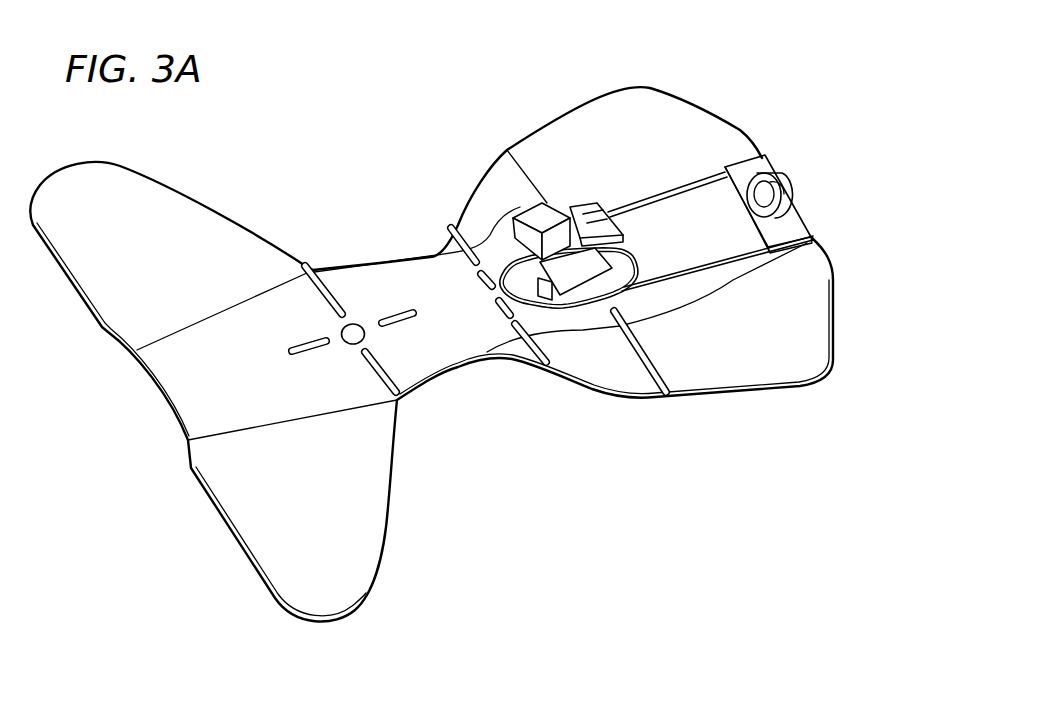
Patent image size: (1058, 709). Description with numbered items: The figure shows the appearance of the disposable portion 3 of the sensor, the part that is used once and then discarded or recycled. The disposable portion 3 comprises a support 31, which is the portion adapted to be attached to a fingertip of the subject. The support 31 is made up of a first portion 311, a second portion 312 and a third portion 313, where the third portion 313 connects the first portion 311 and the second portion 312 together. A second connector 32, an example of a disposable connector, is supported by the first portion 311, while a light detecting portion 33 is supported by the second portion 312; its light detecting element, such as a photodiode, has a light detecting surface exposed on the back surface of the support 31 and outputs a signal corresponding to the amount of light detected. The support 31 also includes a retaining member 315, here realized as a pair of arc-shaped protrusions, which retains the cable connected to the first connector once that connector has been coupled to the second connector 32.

The disposable portion 3 is at (788, 90).
The support 31 is at (404, 215).
The first portion 311 is at (713, 368).
The second portion 312 is at (360, 462).
The third portion 313 is at (463, 350).
The retaining member 315 is at (787, 221).
The second connector 32 is at (547, 212).
The light detecting portion 33 is at (352, 324).